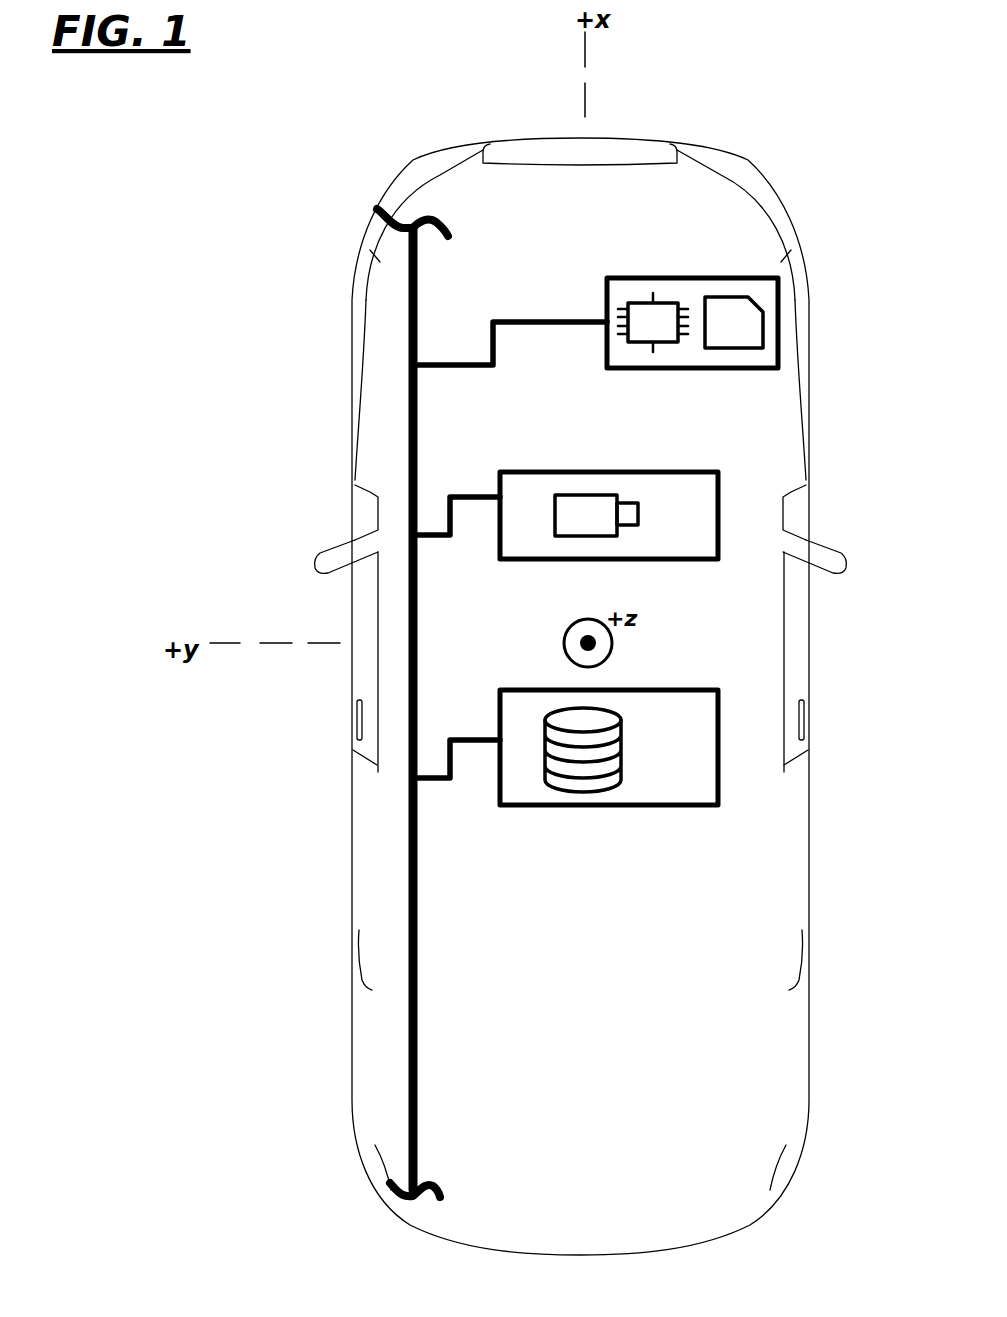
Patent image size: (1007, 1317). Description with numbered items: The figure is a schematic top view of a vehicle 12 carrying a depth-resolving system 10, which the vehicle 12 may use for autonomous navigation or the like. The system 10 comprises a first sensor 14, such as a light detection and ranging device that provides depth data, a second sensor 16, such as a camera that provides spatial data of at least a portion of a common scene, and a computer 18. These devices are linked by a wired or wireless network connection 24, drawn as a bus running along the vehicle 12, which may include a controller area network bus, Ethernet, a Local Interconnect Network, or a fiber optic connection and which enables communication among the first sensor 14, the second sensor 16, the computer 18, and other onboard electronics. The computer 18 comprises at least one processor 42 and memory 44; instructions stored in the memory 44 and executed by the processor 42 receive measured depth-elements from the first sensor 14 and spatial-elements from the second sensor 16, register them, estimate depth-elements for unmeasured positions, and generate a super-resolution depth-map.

The depth-resolving system 10 is at (384, 464).
The vehicle 12 is at (507, 135).
The first sensor 14 is at (609, 747).
The second sensor 16 is at (609, 515).
The computer 18 is at (692, 303).
The network connection 24 is at (403, 336).
The processor 42 is at (653, 322).
The memory 44 is at (734, 322).